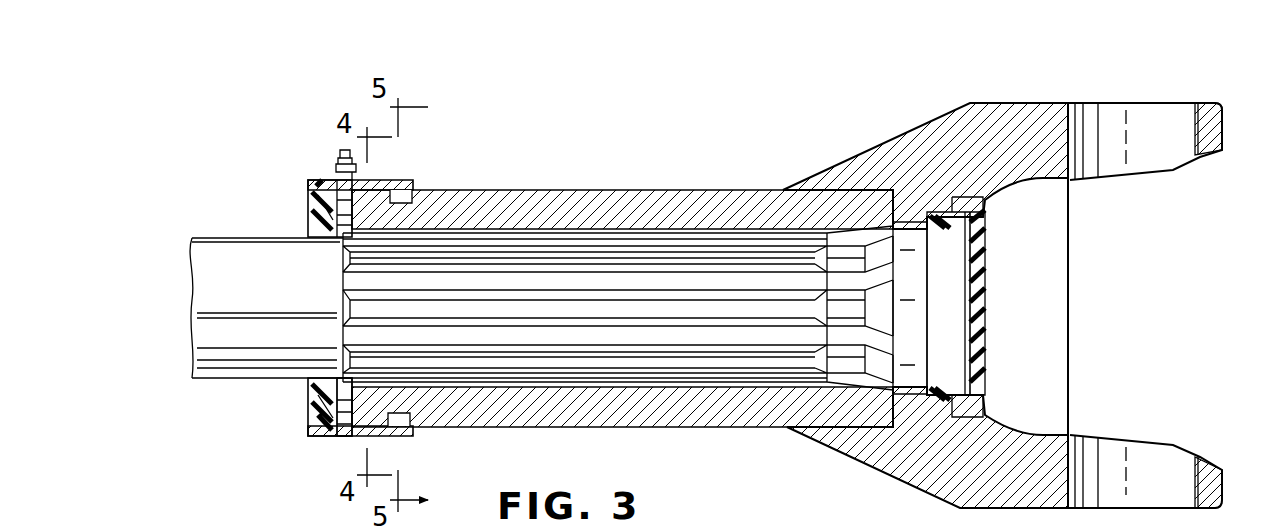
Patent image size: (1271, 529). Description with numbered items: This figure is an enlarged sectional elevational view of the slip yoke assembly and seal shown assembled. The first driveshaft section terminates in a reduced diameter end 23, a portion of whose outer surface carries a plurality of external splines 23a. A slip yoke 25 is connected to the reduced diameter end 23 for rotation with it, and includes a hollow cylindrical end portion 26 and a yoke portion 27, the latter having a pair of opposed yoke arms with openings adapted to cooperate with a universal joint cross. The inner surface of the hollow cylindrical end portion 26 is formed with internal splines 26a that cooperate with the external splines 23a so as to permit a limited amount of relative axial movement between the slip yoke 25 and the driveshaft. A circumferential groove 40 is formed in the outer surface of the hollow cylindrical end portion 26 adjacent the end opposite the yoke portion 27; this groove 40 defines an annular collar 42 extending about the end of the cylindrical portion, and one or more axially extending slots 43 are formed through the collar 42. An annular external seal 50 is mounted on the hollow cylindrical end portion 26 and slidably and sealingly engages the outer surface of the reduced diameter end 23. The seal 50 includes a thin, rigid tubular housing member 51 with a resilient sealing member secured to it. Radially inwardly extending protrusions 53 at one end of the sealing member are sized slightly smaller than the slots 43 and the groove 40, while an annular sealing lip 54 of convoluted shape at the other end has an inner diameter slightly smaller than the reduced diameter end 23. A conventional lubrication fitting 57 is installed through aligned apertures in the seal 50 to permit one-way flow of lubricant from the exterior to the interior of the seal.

The reduced diameter end 23 is at (216, 255).
The external splines 23a is at (602, 345).
The slip yoke 25 is at (797, 140).
The hollow cylindrical end portion 26 is at (655, 207).
The internal splines 26a is at (850, 330).
The yoke portion 27 is at (1045, 112).
The circumferential groove 40 is at (410, 430).
The annular collar 42 is at (362, 436).
The axially extending slot 43 is at (113, 519).
The annular external seal 50 is at (275, 422).
The housing member 51 is at (396, 186).
The radially inwardly extending protrusion 53 is at (408, 198).
The annular sealing lip 54 is at (315, 226).
The lubrication fitting 57 is at (338, 163).